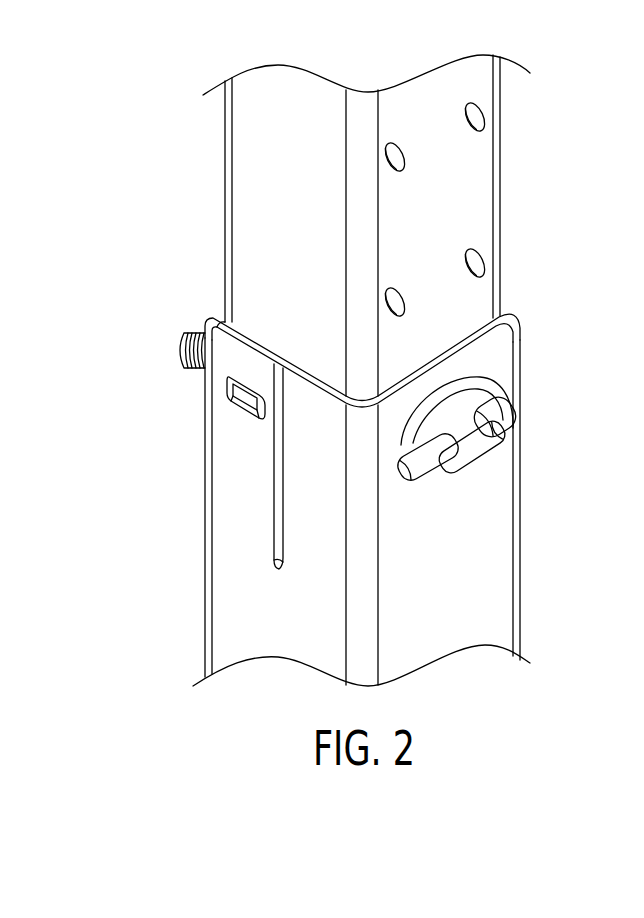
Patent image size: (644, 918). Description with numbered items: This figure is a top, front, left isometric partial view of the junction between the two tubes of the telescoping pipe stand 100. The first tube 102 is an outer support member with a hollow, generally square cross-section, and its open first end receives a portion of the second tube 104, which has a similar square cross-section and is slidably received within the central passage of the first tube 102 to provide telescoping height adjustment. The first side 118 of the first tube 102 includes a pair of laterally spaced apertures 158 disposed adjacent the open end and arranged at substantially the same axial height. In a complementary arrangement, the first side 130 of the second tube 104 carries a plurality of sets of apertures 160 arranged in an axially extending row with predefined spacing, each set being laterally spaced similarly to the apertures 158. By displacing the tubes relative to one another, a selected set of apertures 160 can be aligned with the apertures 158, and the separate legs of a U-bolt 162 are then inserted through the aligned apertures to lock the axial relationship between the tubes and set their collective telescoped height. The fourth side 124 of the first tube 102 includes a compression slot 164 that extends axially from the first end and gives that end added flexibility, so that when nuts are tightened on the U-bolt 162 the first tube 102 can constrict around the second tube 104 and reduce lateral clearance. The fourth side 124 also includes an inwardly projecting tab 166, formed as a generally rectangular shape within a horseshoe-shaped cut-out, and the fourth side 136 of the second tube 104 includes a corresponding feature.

The telescoping pipe stand 100 is at (549, 57).
The first tube 102 is at (533, 530).
The second tube 104 is at (218, 160).
The first side 118 is at (488, 578).
The fourth side 124 is at (230, 598).
The first side 130 is at (480, 210).
The fourth side 136 is at (252, 227).
The apertures 158 is at (480, 395).
The apertures 160 is at (405, 158).
The U-bolt 162 is at (487, 447).
The compression slot 164 is at (278, 492).
The inwardly projecting tab 166 is at (236, 421).